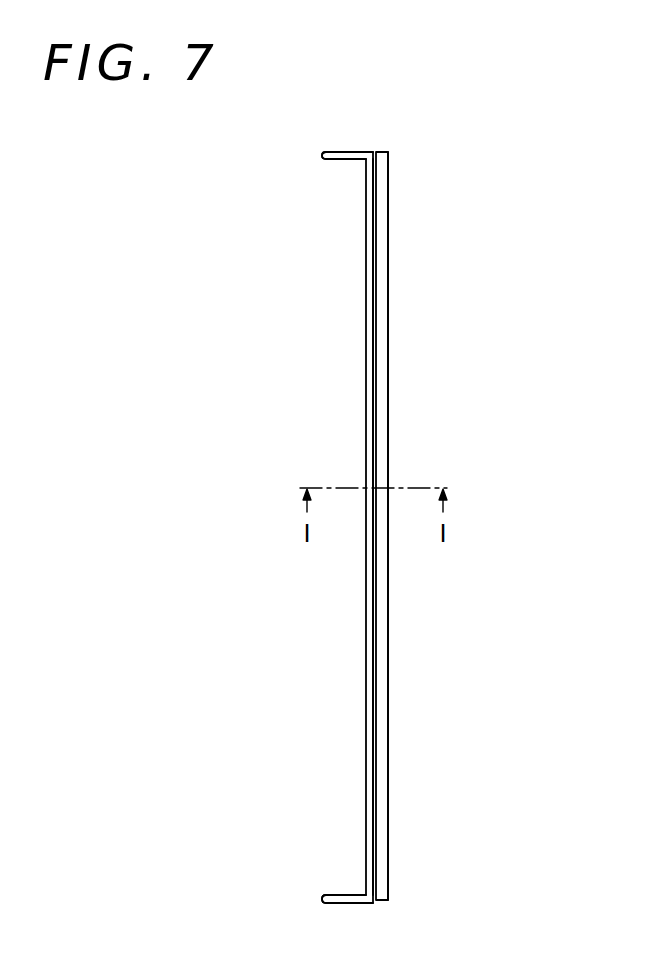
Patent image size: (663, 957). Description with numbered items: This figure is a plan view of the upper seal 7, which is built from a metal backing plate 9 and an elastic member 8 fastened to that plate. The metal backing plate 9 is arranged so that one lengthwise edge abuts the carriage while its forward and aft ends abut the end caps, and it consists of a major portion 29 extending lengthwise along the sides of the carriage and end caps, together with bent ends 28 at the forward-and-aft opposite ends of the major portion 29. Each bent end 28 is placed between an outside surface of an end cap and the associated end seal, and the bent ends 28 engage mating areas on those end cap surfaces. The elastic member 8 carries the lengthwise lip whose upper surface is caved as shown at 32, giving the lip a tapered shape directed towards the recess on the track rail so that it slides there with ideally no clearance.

The upper seal 7 is at (403, 191).
The elastic member 8 is at (382, 385).
The metal backing plate 9 is at (366, 360).
The bent ends 28 is at (342, 155).
The major portion 29 is at (373, 712).
The caved upper surface of the lip 32 is at (382, 640).